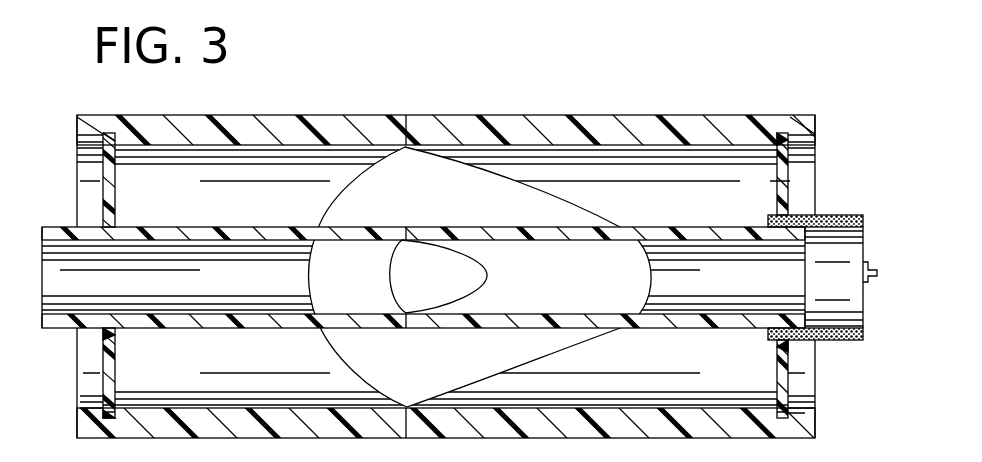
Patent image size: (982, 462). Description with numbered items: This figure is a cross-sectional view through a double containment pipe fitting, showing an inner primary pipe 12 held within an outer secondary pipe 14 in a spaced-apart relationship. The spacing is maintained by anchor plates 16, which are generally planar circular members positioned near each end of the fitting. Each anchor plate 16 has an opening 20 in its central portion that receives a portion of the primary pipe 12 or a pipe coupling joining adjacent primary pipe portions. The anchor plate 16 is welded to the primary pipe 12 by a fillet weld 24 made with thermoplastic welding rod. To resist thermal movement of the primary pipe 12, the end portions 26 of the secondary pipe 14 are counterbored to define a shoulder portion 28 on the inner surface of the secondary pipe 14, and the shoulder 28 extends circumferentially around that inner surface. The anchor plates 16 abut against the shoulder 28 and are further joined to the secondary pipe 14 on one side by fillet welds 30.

The primary pipe 12 is at (236, 232).
The secondary pipe 14 is at (288, 130).
The anchor plate 16 is at (105, 192).
The opening 20 is at (827, 217).
The fillet weld 24 is at (100, 331).
The end portion 26 is at (113, 124).
The shoulder portion 28 is at (773, 132).
The fillet weld 30 is at (100, 413).